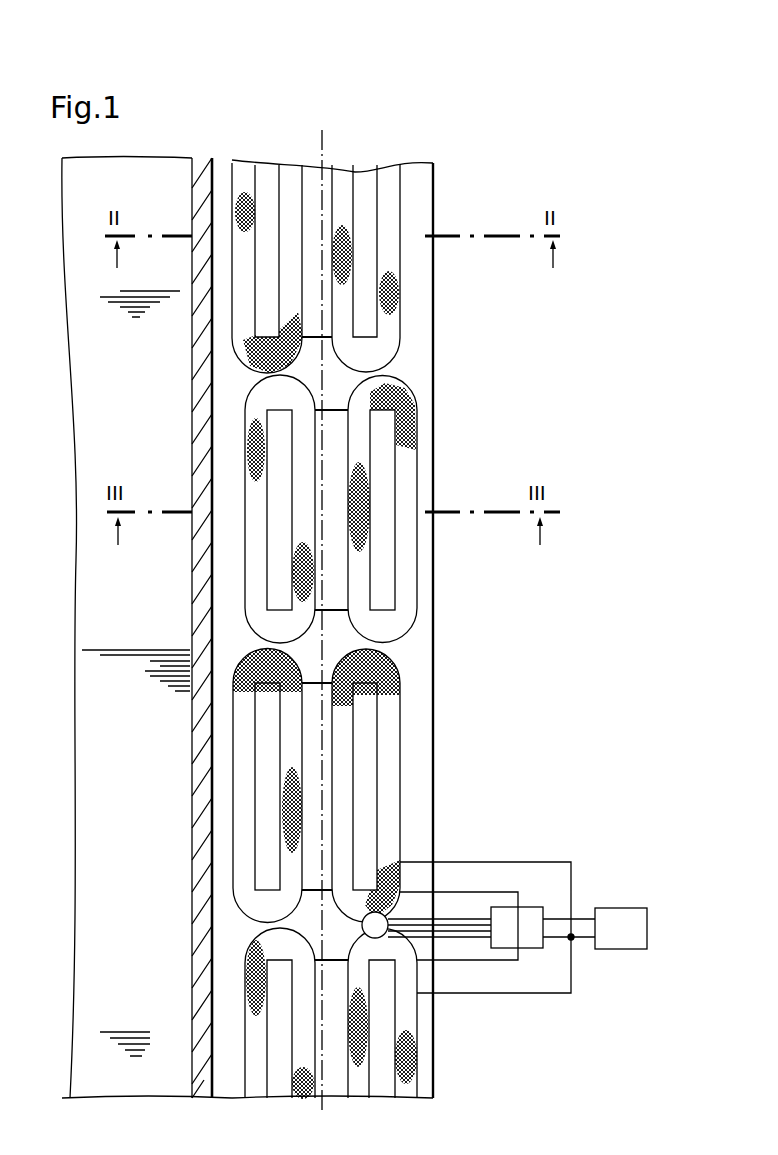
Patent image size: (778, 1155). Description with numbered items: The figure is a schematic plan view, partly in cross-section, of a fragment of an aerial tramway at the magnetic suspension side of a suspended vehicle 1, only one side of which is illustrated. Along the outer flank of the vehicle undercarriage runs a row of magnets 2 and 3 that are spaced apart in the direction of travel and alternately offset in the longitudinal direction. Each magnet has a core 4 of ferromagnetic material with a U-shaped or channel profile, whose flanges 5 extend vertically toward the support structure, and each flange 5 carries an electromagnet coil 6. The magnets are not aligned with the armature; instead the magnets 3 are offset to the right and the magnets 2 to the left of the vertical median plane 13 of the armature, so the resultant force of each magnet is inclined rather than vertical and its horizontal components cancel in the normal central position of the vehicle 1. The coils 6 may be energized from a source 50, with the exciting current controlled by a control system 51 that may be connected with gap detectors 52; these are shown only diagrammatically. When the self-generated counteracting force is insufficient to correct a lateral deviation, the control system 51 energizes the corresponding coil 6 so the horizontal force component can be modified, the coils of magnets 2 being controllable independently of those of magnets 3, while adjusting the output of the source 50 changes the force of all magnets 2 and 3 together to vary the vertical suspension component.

The suspended vehicle 1 is at (90, 753).
The magnet 2 is at (405, 262).
The magnet 3 is at (428, 490).
The core 4 is at (405, 557).
The flange 5 is at (372, 318).
The electromagnet coil 6 is at (390, 208).
The vertical median plane 13 is at (322, 140).
The source 50 is at (635, 911).
The control system 51 is at (528, 912).
The gap detector 52 is at (362, 927).